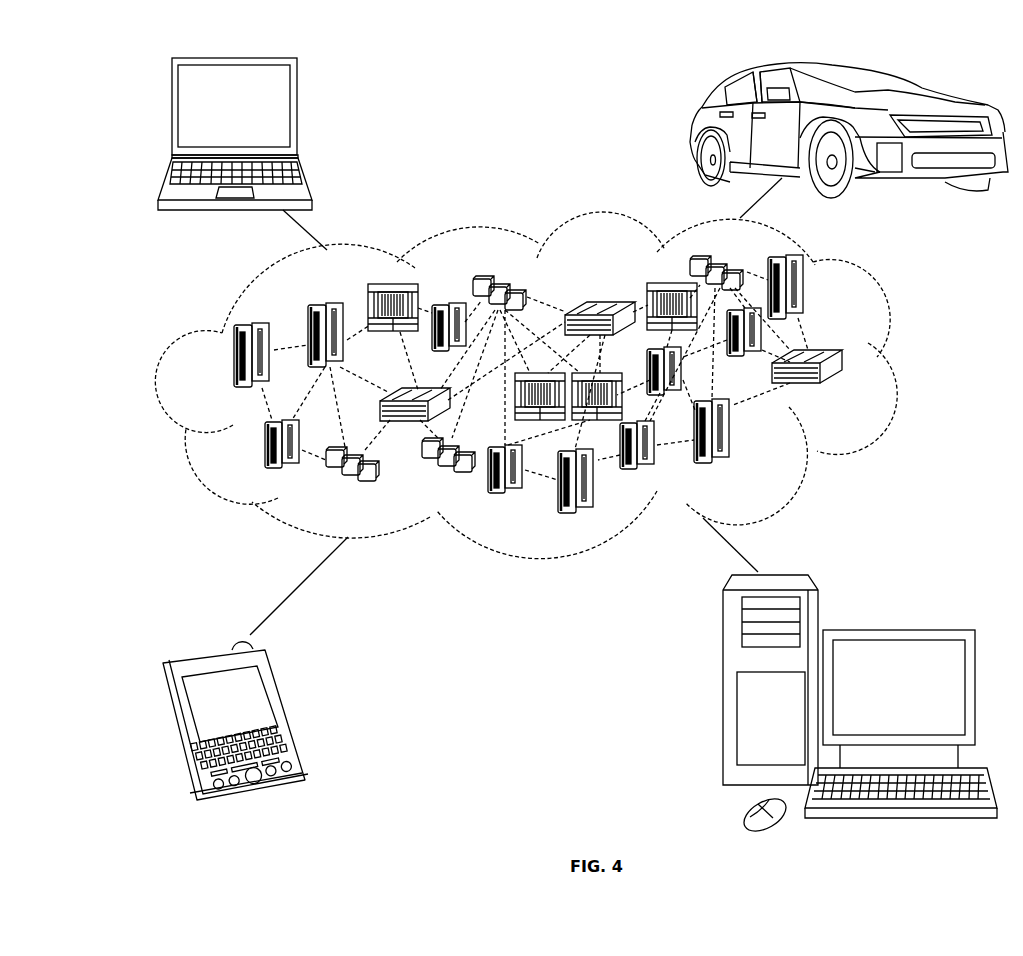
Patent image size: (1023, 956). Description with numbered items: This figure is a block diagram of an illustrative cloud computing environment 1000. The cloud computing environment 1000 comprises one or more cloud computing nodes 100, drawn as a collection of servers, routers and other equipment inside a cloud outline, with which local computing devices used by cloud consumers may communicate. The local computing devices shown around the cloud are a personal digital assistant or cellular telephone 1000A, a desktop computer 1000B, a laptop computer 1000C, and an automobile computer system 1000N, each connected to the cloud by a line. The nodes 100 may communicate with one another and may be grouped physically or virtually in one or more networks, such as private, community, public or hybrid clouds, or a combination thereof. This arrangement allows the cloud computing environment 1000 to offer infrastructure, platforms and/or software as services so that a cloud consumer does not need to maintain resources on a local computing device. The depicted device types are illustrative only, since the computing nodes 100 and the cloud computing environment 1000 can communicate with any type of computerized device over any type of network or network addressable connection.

The cloud computing nodes 100 is at (843, 393).
The cloud computing environment 1000 is at (897, 363).
The personal digital assistant or cellular telephone 1000A is at (290, 713).
The desktop computer 1000B is at (895, 628).
The laptop computer 1000C is at (298, 117).
The automobile computer system 1000N is at (697, 130).